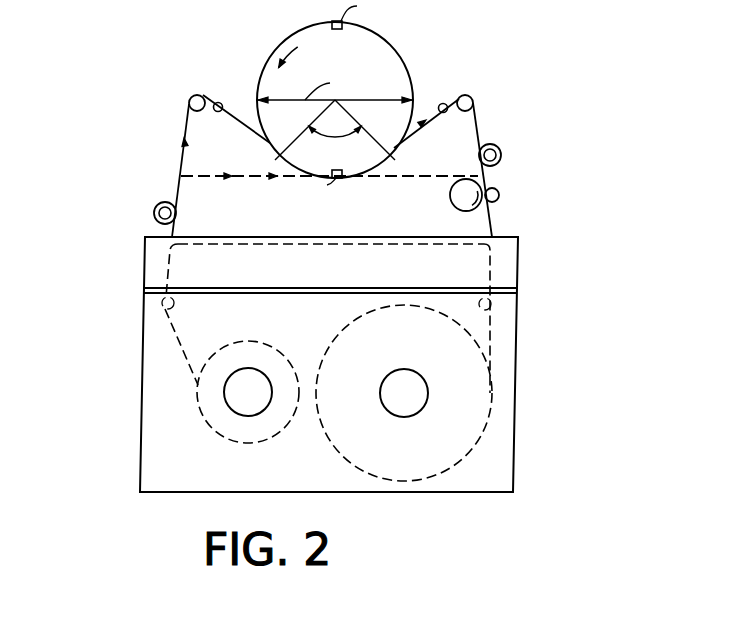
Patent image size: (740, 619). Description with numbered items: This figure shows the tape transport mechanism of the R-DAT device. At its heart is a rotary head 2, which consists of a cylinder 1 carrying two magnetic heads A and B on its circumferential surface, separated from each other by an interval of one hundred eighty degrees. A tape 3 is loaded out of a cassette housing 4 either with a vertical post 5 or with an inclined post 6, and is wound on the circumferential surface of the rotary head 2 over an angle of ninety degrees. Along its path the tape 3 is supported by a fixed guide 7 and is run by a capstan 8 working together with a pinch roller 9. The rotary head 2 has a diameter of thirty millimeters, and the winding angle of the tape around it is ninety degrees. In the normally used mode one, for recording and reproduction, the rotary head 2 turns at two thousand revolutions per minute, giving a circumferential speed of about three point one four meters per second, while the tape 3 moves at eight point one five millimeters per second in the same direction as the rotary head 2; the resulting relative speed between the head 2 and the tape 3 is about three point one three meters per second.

The cylinder 1 is at (398, 51).
The rotary head 2 is at (412, 78).
The tape 3 is at (481, 130).
The cassette housing 4 is at (516, 421).
The vertical post 5 is at (203, 96).
The inclined post 6 is at (220, 112).
The fixed guide 7 is at (156, 208).
The capstan 8 is at (499, 199).
The pinch roller 9 is at (484, 205).